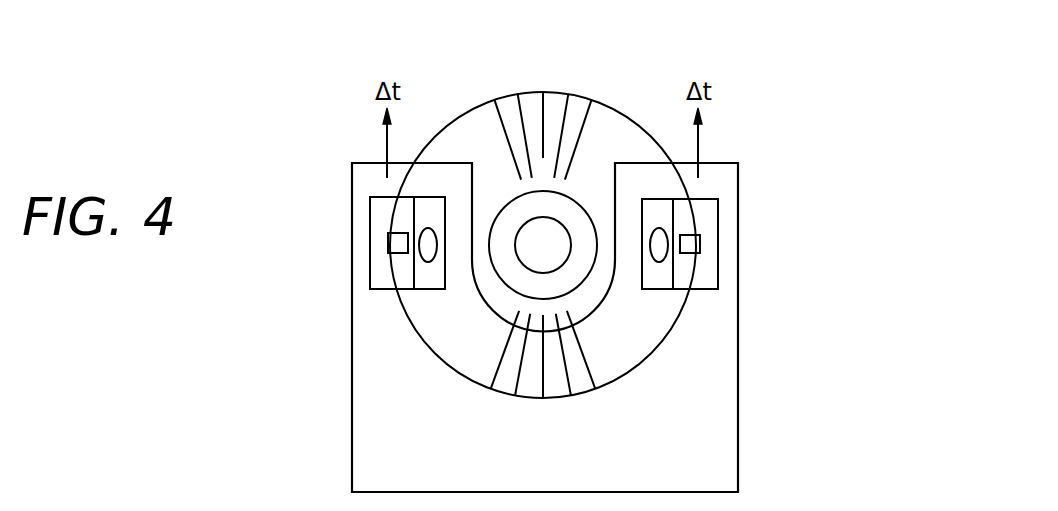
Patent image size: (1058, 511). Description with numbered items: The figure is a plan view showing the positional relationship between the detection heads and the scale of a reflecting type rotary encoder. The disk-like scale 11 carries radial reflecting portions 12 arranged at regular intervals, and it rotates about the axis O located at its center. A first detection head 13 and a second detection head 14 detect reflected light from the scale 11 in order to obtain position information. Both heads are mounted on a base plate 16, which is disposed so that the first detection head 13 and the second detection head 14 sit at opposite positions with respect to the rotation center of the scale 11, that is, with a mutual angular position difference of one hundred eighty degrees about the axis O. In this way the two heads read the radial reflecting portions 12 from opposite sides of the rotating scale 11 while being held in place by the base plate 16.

The scale 11 is at (612, 122).
The radial reflecting portions 12 is at (566, 108).
The first detection head 13 is at (378, 215).
The second detection head 14 is at (712, 217).
The base plate 16 is at (708, 445).
The axis O is at (543, 245).